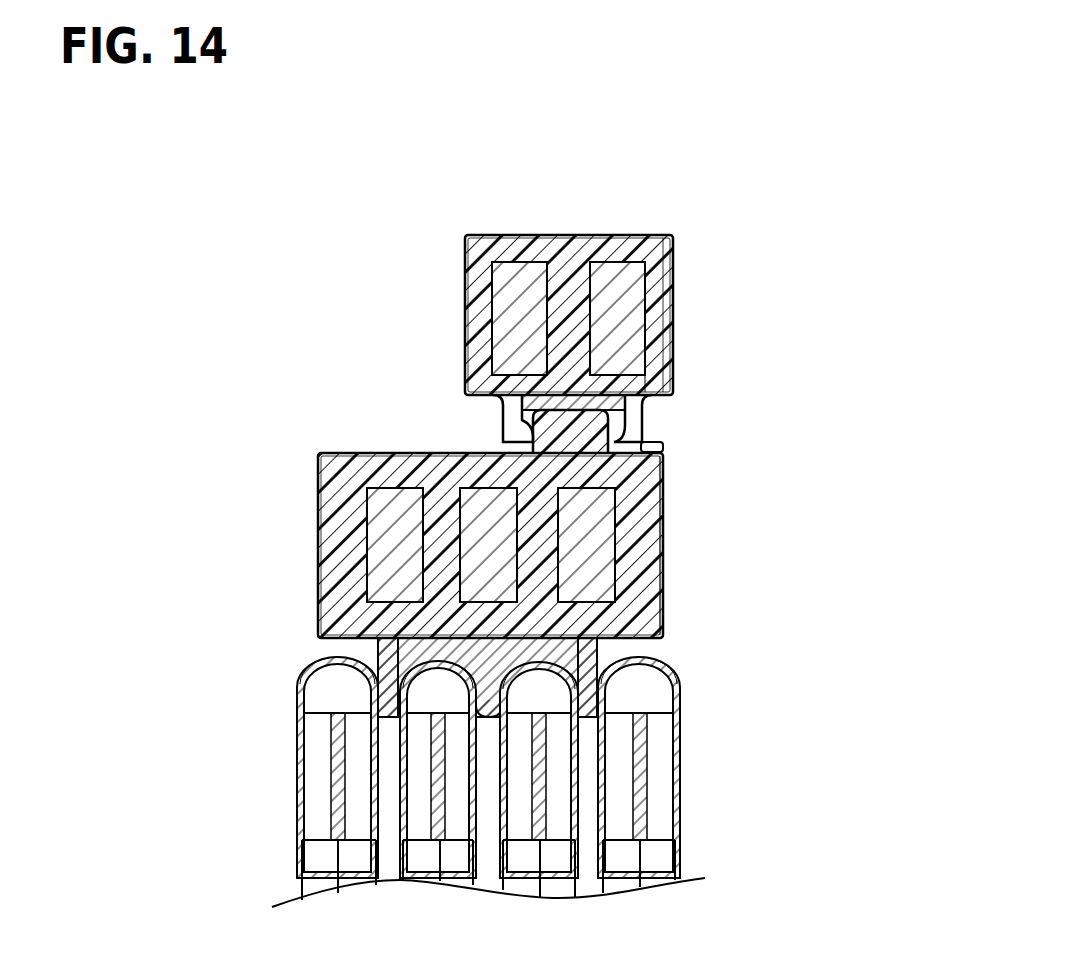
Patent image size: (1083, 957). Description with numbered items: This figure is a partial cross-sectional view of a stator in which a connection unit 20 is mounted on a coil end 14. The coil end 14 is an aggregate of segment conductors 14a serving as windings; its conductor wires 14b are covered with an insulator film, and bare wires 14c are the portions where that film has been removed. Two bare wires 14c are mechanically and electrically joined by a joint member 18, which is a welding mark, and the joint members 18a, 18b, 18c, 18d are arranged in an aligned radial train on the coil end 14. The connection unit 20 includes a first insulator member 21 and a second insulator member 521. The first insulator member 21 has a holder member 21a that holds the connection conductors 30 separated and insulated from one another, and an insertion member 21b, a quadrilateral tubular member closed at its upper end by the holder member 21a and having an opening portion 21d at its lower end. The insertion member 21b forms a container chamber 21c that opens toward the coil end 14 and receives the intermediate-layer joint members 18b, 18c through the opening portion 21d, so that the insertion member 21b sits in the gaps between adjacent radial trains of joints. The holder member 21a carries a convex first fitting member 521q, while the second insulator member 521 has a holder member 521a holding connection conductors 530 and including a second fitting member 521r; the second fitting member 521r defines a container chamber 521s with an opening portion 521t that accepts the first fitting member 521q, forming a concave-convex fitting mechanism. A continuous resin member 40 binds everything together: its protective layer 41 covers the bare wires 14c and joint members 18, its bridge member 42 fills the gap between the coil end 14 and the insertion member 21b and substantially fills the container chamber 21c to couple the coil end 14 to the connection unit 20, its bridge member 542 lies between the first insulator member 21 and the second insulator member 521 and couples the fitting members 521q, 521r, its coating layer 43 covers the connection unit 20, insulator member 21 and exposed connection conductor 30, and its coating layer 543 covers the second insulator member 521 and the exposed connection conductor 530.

The coil end 14 is at (540, 837).
The segment conductor 14a is at (657, 855).
The conductor wire 14b is at (317, 880).
The bare wire 14c is at (316, 808).
The joint member 18 is at (506, 762).
The joint member 18a is at (647, 703).
The joint member 18b is at (540, 700).
The joint member 18c is at (433, 704).
The joint member 18d is at (335, 703).
The connection unit 20 is at (546, 626).
The insulator member 21 is at (516, 626).
The holder member 21a is at (663, 568).
The insertion member 21b is at (584, 652).
The container chamber 21c is at (586, 640).
The opening portion 21d is at (489, 708).
The connection conductor 30 is at (350, 540).
The resin member 40 is at (422, 735).
The protective layer 41 is at (297, 698).
The bridge member 42 is at (340, 677).
The coating layer 43 is at (318, 470).
The second insulator member 521 is at (603, 343).
The holder member 521a is at (673, 305).
The first fitting member 521q is at (507, 413).
The second fitting member 521r is at (644, 420).
The container chamber 521s is at (645, 377).
The opening portion 521t is at (665, 447).
The connection conductor 530 is at (492, 335).
The bridge member 542 is at (497, 378).
The coating layer 543 is at (467, 290).